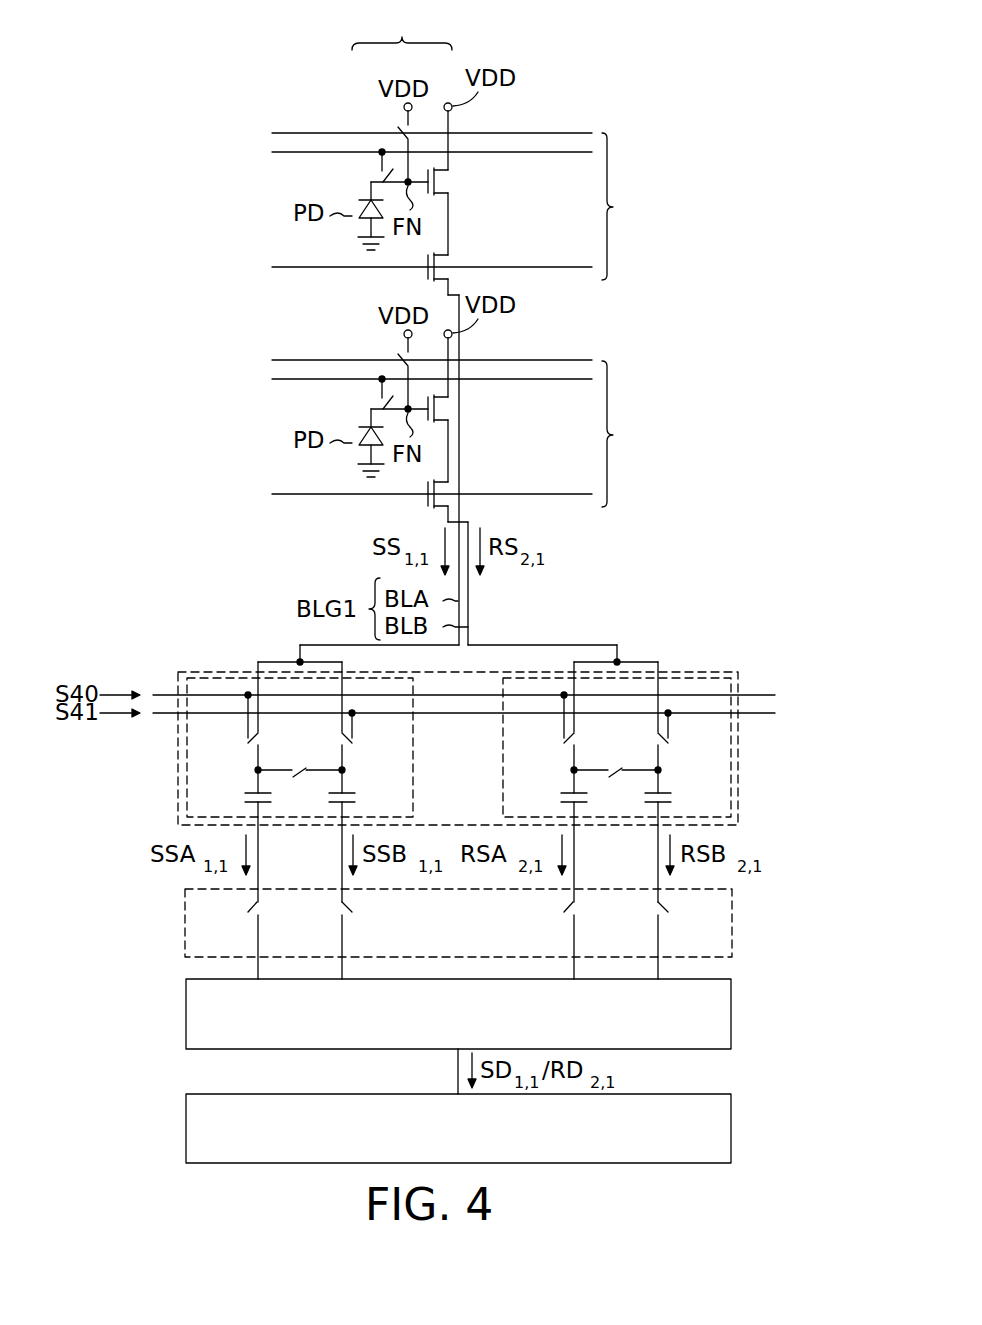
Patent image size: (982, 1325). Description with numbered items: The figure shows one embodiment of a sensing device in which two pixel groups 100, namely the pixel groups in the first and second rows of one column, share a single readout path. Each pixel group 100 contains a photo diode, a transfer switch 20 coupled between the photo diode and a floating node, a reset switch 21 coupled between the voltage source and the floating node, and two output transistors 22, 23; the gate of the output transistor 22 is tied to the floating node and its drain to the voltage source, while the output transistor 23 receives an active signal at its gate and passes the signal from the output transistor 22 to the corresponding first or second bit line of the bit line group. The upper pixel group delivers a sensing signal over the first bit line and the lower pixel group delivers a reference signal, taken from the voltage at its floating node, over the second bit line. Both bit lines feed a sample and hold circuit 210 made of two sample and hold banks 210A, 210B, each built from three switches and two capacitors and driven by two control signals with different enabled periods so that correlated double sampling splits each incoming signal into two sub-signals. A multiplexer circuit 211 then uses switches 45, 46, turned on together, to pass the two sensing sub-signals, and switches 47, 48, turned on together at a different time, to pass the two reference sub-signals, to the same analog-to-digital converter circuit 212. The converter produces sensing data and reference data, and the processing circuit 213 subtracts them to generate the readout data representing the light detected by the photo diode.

The pixel group 100 is at (348, 343).
The transfer switch 20 is at (371, 180).
The reset switch 21 is at (399, 126).
The output transistor 22 is at (445, 183).
The output transistor 23 is at (449, 261).
The switch 45 is at (255, 913).
The switch 46 is at (344, 915).
The switch 47 is at (571, 913).
The switch 48 is at (661, 915).
The sample and hold circuit 210 is at (708, 673).
The sample and hold bank 210A is at (178, 775).
The sample and hold bank 210B is at (740, 775).
The multiplexer circuit 211 is at (735, 919).
The analog-to-digital converter circuit 212 is at (733, 1015).
The processing circuit 213 is at (733, 1128).